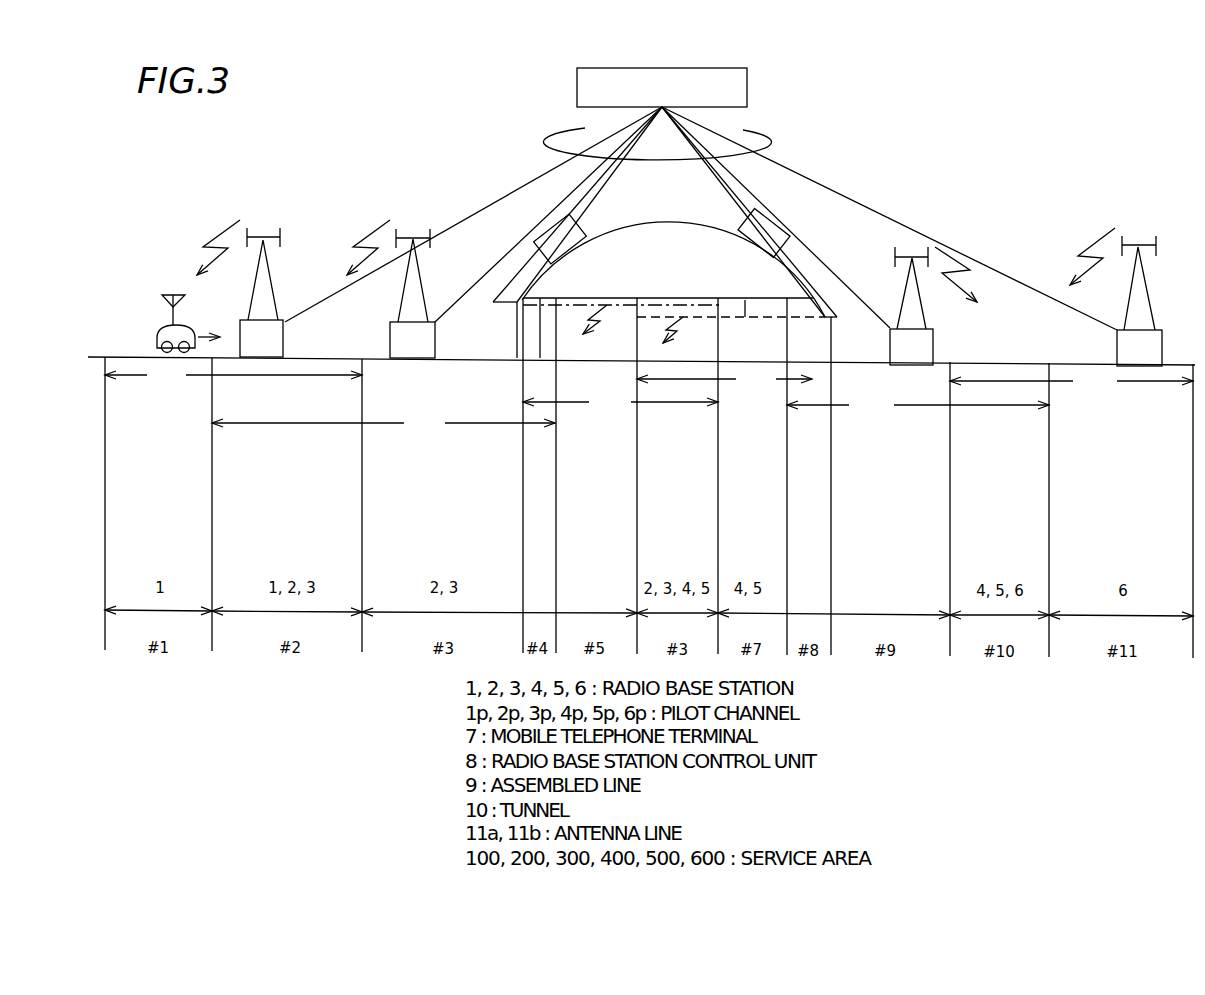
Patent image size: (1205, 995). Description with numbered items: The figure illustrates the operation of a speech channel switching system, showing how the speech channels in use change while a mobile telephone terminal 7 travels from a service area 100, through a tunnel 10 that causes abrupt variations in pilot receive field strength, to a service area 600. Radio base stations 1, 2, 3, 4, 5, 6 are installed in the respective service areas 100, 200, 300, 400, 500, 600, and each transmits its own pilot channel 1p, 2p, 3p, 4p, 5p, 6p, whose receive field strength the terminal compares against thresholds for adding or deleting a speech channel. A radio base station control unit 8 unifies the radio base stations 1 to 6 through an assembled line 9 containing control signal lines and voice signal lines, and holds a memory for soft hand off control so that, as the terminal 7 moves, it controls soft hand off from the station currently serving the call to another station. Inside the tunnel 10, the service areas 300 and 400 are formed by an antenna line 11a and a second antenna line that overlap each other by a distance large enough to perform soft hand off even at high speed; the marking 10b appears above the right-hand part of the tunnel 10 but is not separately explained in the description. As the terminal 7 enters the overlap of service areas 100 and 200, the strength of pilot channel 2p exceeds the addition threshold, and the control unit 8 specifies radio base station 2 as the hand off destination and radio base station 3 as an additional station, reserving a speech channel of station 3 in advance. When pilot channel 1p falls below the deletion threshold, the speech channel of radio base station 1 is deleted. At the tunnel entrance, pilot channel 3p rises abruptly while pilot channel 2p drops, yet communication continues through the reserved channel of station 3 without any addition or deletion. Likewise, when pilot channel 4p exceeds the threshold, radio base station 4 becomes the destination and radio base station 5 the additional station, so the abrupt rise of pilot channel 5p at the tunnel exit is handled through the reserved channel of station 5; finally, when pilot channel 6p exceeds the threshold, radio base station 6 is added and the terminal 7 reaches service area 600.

The radio base station 1 is at (261, 292).
The radio base station 2 is at (412, 293).
The radio base station 3 is at (560, 239).
The radio base station 4 is at (764, 233).
The radio base station 5 is at (911, 306).
The radio base station 6 is at (1139, 301).
The pilot channel 1p is at (210, 235).
The pilot channel 2p is at (360, 235).
The pilot channel 3p is at (596, 324).
The pilot channel 4p is at (680, 333).
The pilot channel 5p is at (951, 284).
The pilot channel 6p is at (1090, 243).
The mobile telephone terminal 7 is at (183, 303).
The radio base station control unit 8 is at (747, 90).
The assembled line 9 is at (743, 130).
The tunnel 10 is at (584, 297).
The tunnel 10b is at (745, 300).
The antenna line 11a is at (672, 304).
The service area 100 is at (233, 376).
The service area 200 is at (383, 424).
The service area 300 is at (620, 403).
The service area 400 is at (724, 380).
The service area 500 is at (918, 406).
The service area 600 is at (1071, 382).